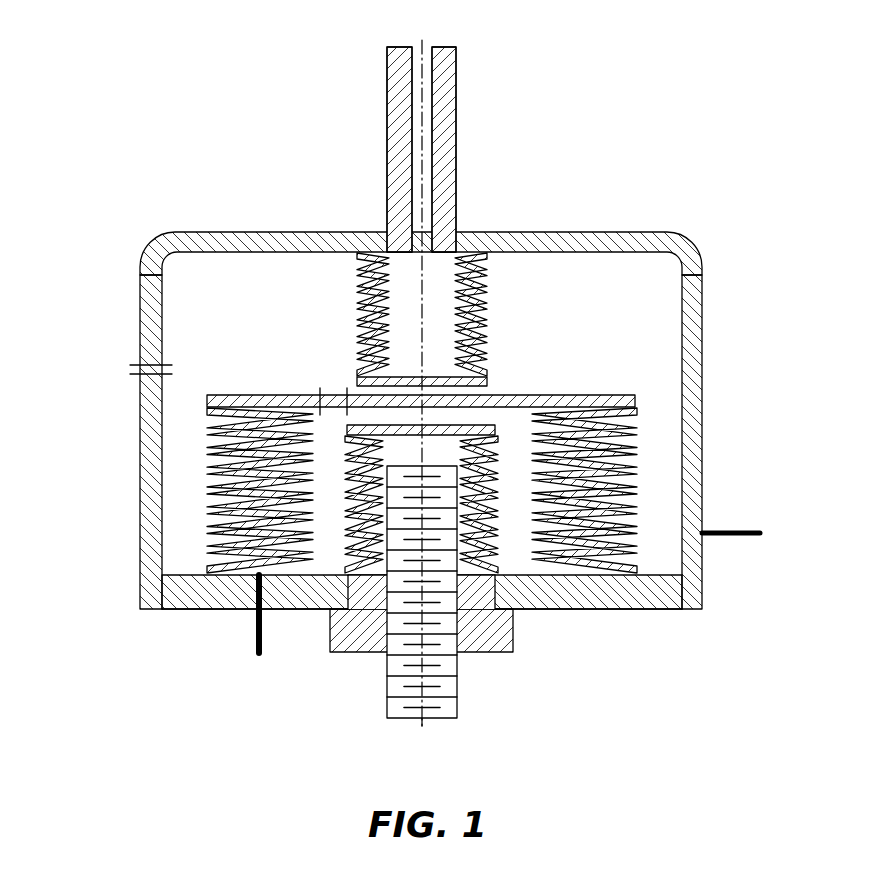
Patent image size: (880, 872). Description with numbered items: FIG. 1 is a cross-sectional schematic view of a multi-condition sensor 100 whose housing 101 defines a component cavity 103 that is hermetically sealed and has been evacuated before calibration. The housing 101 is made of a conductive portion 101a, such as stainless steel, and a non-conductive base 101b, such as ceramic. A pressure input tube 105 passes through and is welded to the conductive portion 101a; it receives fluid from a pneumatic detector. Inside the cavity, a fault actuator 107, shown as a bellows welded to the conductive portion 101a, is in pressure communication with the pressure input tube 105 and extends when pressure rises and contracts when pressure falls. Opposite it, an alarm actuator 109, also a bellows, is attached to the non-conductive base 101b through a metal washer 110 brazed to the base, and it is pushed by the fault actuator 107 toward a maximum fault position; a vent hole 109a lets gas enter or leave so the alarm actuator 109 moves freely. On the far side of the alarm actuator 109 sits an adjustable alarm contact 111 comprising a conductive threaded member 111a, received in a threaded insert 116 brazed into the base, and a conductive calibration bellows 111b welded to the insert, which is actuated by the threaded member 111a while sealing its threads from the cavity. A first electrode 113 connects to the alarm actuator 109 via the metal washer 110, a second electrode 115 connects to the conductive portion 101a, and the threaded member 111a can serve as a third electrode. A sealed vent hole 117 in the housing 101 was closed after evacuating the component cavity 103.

The multi-condition sensor 100 is at (752, 106).
The housing 101 is at (384, 381).
The conductive portion 101a is at (138, 291).
The non-conductive base 101b is at (599, 614).
The component cavity 103 is at (608, 295).
The pressure input tube 105 is at (460, 127).
The fault actuator 107 is at (491, 296).
The alarm actuator 109 is at (420, 490).
The vent hole 109a is at (314, 409).
The metal washer 110 is at (217, 581).
The adjustable alarm contact 111 is at (485, 409).
The conductive threaded member 111a is at (459, 614).
The conductive calibration bellows 111b is at (497, 542).
The first electrode 113 is at (255, 634).
The second electrode 115 is at (745, 532).
The threaded insert 116 is at (351, 657).
The sealed vent hole 117 is at (127, 361).